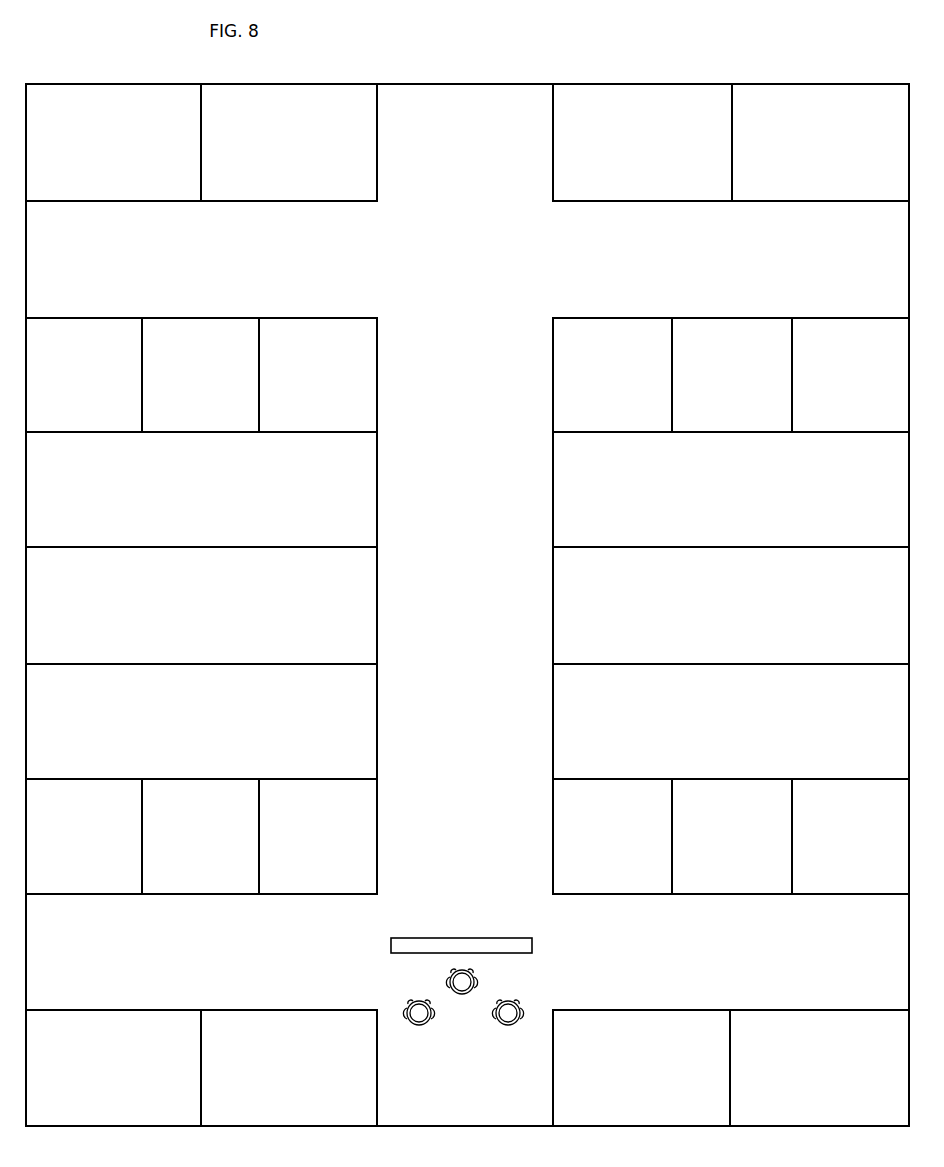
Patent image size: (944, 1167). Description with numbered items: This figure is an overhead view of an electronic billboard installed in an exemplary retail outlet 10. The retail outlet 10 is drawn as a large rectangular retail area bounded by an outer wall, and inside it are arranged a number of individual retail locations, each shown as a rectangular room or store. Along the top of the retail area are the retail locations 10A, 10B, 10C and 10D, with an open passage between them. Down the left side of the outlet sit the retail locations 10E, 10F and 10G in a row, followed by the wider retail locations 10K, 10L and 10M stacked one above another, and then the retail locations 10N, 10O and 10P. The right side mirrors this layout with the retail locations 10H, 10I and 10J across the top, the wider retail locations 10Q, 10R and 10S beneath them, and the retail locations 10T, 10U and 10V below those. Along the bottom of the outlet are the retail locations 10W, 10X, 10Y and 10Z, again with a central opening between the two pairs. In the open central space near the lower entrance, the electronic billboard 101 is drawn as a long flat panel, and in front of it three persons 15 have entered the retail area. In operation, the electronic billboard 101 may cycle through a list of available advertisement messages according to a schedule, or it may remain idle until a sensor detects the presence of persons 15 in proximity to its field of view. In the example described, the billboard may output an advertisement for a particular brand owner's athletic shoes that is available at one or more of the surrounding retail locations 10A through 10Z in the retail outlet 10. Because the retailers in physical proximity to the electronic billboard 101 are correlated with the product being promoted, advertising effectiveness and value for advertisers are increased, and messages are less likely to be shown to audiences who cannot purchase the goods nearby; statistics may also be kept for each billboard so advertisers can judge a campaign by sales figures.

The retail outlet 10 is at (470, 84).
The electronic billboard 101 is at (467, 938).
The persons 15 is at (510, 992).
The retail location 10A is at (113, 142).
The retail location 10B is at (289, 142).
The retail location 10C is at (642, 142).
The retail location 10D is at (820, 142).
The retail location 10E is at (84, 375).
The retail location 10F is at (200, 375).
The retail location 10G is at (318, 375).
The retail location 10H is at (612, 375).
The retail location 10I is at (732, 375).
The retail location 10J is at (850, 375).
The retail location 10K is at (201, 489).
The retail location 10L is at (201, 605).
The retail location 10M is at (201, 721).
The retail location 10N is at (84, 836).
The retail location 10O is at (200, 836).
The retail location 10P is at (318, 836).
The retail location 10Q is at (731, 489).
The retail location 10R is at (731, 605).
The retail location 10S is at (731, 721).
The retail location 10T is at (612, 836).
The retail location 10U is at (732, 836).
The retail location 10V is at (850, 836).
The retail location 10W is at (113, 1068).
The retail location 10X is at (289, 1068).
The retail location 10Y is at (641, 1068).
The retail location 10Z is at (819, 1068).